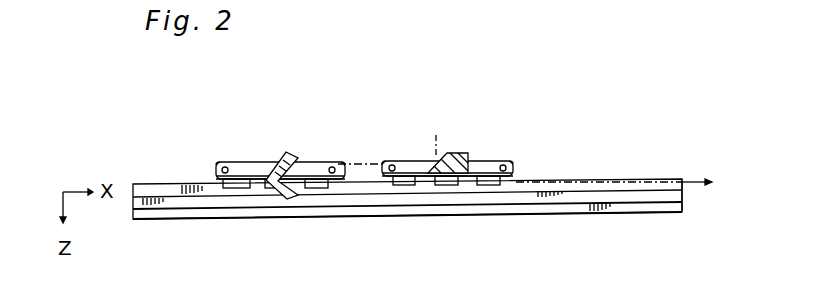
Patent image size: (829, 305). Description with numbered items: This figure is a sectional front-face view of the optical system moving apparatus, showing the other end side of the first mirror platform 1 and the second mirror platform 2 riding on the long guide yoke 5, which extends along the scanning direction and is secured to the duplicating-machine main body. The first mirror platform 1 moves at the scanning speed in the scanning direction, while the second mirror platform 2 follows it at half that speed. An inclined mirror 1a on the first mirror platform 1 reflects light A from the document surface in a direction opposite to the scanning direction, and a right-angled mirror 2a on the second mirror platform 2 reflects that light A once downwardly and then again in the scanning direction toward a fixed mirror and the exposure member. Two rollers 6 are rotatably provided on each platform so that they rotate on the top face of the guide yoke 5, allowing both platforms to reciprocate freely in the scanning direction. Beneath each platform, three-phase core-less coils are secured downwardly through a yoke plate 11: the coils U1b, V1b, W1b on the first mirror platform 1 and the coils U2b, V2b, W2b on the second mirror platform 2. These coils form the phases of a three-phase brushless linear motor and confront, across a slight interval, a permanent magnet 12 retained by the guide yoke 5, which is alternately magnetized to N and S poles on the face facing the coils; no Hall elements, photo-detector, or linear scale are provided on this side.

The first mirror platform 1 is at (491, 145).
The inclined mirror 1a is at (440, 156).
The second mirror platform 2 is at (267, 160).
The right-angled mirror 2a is at (299, 157).
The guide yoke 5 is at (162, 183).
The rollers 6 is at (222, 163).
The yoke plate 11 is at (244, 178).
The permanent magnet 12 is at (676, 193).
The light A is at (436, 133).
The core-less coil U2b is at (236, 188).
The core-less coil V2b is at (272, 188).
The core-less coil W2b is at (327, 188).
The core-less coil U1b is at (406, 185).
The core-less coil V1b is at (453, 185).
The core-less coil W1b is at (497, 185).